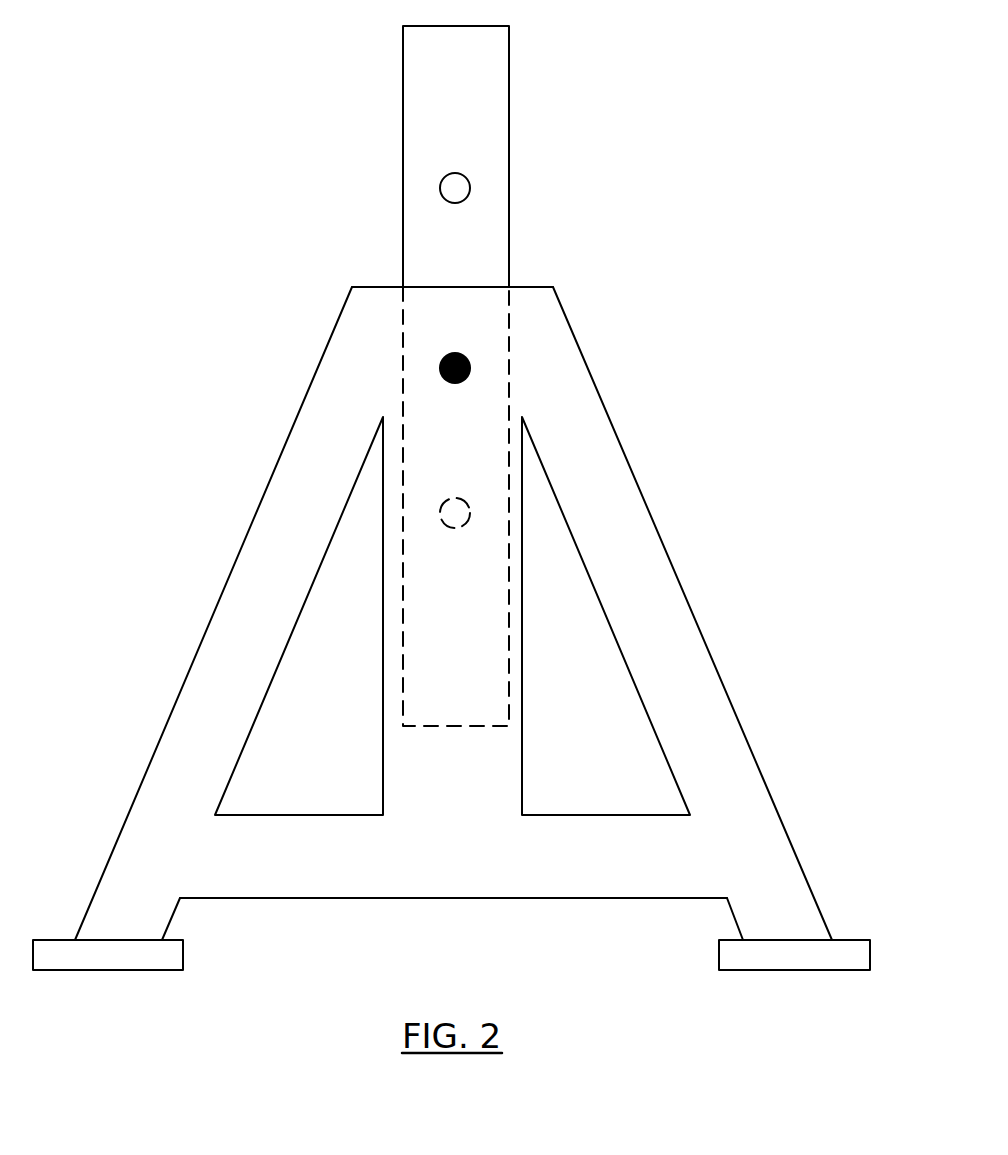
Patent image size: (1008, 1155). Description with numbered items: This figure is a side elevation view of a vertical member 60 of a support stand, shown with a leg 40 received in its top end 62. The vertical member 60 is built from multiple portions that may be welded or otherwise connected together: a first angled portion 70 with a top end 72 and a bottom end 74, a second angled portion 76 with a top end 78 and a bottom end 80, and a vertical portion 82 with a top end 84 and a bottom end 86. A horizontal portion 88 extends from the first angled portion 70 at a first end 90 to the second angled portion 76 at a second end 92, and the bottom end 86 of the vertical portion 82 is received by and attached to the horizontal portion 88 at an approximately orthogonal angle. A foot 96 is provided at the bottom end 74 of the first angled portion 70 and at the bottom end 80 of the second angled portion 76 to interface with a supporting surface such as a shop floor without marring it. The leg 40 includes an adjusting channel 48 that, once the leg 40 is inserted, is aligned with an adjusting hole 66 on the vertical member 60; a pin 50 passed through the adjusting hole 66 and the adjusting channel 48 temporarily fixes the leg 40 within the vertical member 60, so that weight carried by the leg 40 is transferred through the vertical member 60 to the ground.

The leg 40 is at (491, 106).
The adjusting channel 48 is at (440, 188).
The pin 50 is at (468, 374).
The vertical member 60 is at (212, 388).
The top end 62 is at (435, 320).
The adjusting hole 66 is at (442, 360).
The first angled portion 70 is at (272, 530).
The top end 72 is at (370, 302).
The bottom end 74 is at (125, 905).
The second angled portion 76 is at (680, 662).
The top end 78 is at (568, 322).
The bottom end 80 is at (762, 890).
The vertical portion 82 is at (483, 612).
The top end 84 is at (482, 320).
The bottom end 86 is at (402, 777).
The horizontal portion 88 is at (518, 863).
The first end 90 is at (238, 873).
The second end 92 is at (663, 873).
The foot 96 is at (60, 957).